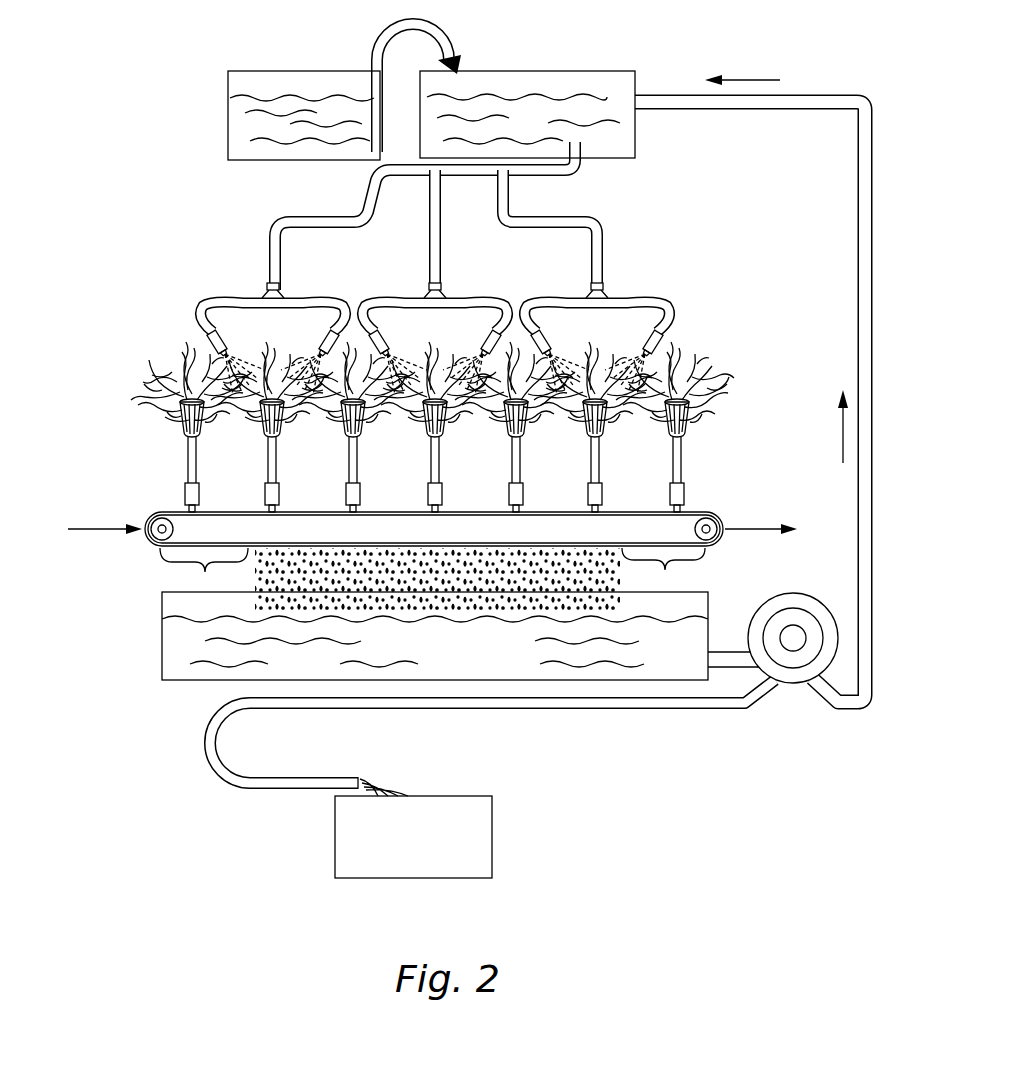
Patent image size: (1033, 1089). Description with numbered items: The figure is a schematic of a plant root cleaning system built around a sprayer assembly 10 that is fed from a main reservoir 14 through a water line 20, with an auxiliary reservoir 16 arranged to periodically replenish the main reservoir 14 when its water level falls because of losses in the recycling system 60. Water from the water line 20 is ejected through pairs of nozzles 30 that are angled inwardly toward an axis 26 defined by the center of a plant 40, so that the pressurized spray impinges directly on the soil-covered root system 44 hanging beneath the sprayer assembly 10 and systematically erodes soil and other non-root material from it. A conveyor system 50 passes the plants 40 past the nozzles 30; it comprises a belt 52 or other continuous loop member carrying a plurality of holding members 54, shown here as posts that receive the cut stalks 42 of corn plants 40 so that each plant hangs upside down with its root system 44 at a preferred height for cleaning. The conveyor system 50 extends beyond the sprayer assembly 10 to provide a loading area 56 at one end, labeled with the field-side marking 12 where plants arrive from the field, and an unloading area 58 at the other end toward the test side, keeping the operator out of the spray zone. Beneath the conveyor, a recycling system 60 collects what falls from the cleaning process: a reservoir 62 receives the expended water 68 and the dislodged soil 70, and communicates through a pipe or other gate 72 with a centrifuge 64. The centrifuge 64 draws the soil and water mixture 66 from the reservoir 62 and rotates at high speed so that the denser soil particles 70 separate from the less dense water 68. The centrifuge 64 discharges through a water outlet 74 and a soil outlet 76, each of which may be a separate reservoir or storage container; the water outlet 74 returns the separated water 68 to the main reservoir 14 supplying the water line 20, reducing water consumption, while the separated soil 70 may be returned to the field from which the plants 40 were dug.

The sprayer assembly 10 is at (424, 322).
The field end of conveyor 12 is at (95, 493).
The main reservoir 14 is at (490, 71).
The auxiliary reservoir 16 is at (253, 85).
The water line 20 is at (276, 232).
The axis 26 is at (698, 511).
The nozzles 30 is at (213, 338).
The plant 40 is at (724, 426).
The stalk 42 is at (690, 482).
The root system 44 is at (150, 407).
The conveyor system 50 is at (425, 524).
The belt 52 is at (456, 503).
The holding members 54 is at (268, 496).
The loading area 56 is at (205, 572).
The unloading area 58 is at (665, 570).
The recycling system 60 is at (433, 659).
The reservoir 62 is at (162, 660).
The centrifuge 64 is at (785, 596).
The soil and water mixture 66 is at (177, 646).
The expended water 68 is at (275, 586).
The dislodged soil 70 is at (605, 558).
The pipe or gate 72 is at (720, 658).
The water outlet 74 is at (600, 82).
The soil outlet 76 is at (478, 840).